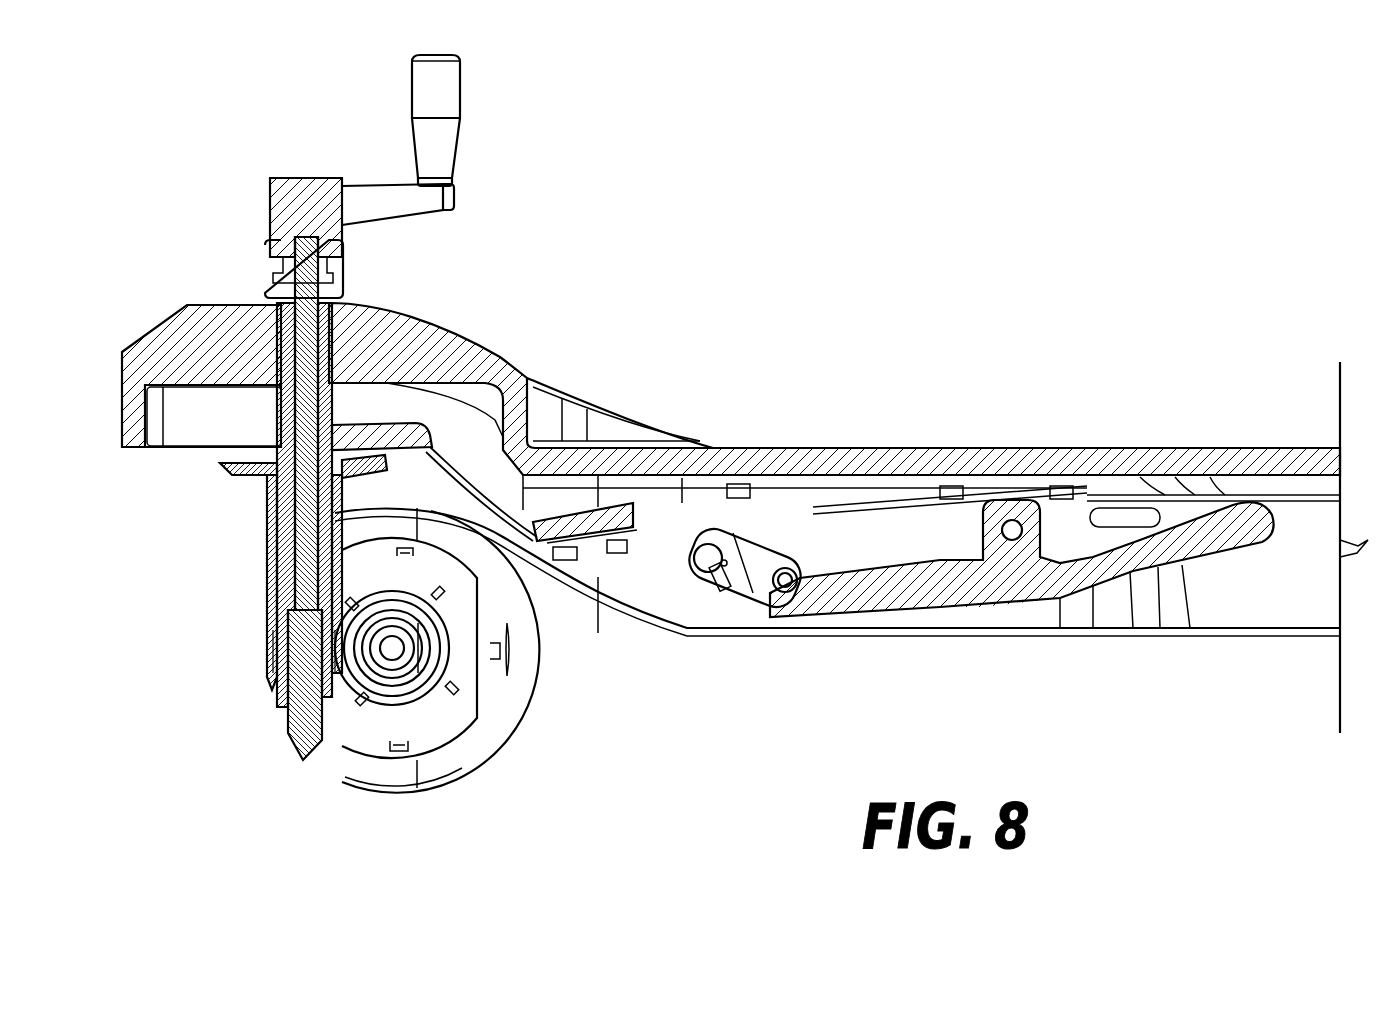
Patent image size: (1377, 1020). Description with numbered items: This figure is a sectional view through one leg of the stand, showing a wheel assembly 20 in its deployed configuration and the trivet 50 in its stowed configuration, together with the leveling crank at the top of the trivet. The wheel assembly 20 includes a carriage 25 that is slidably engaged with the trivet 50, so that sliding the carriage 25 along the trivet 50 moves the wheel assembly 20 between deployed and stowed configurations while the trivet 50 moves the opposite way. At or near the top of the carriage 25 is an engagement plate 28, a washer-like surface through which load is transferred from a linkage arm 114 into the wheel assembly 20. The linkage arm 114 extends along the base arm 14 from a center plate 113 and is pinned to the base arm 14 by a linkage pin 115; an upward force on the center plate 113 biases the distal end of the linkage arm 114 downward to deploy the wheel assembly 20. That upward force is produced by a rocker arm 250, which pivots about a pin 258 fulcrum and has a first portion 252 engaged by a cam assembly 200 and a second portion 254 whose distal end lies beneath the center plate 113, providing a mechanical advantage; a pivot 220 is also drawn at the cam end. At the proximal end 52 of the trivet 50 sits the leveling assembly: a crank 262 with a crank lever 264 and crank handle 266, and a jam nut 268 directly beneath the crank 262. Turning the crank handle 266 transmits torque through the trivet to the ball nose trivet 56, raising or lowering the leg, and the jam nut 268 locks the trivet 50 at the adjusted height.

The base arm 14 is at (457, 338).
The wheel assembly 20 is at (434, 800).
The carriage 25 is at (273, 538).
The engagement plate 28 is at (233, 480).
The trivet 50 is at (276, 407).
The proximal end of trivet 52 is at (300, 266).
The ball nose trivet 56 is at (303, 737).
The center plate 113 is at (1278, 490).
The linkage arm 114 is at (433, 463).
The linkage pin 115 is at (708, 563).
The cam assembly 200 is at (755, 553).
The pivot 220 is at (780, 594).
The rocker arm 250 is at (1022, 550).
The first portion of rocker arm 252 is at (835, 601).
The second portion of rocker arm 254 is at (1163, 558).
The pin 258 is at (1012, 531).
The crank 262 is at (301, 176).
The crank lever 264 is at (397, 182).
The crank handle 266 is at (462, 103).
The jam nut 268 is at (347, 289).